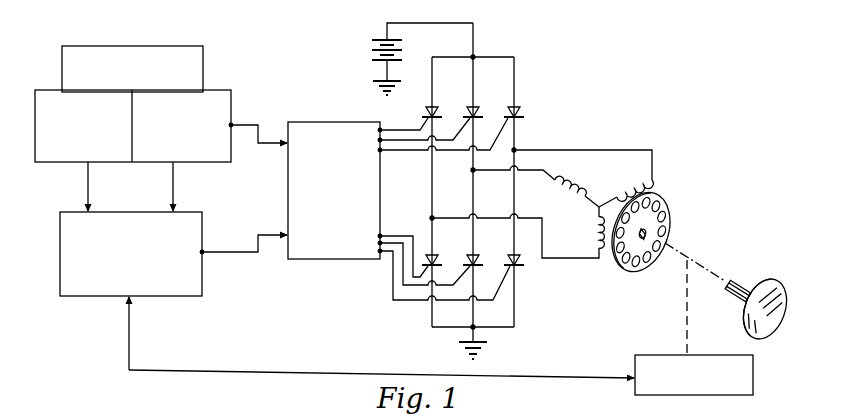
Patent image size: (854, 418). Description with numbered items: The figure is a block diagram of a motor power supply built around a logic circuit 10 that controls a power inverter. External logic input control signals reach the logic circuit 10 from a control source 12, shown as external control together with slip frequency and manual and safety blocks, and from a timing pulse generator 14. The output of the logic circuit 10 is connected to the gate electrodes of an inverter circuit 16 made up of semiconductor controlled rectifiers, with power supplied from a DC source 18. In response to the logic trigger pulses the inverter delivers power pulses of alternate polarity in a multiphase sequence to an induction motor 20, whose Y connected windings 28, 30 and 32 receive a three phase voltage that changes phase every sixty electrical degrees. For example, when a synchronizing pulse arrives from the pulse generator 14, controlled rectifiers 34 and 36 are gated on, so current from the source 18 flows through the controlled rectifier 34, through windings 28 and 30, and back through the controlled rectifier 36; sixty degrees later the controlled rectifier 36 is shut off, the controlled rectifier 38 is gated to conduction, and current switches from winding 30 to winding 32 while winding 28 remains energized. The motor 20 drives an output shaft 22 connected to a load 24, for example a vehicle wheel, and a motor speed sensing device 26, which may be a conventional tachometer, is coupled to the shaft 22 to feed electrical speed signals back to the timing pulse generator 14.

The logic circuit 10 is at (317, 119).
The control source 12 is at (87, 41).
The timing pulse generator 14 is at (198, 211).
The inverter circuit 16 is at (472, 187).
The DC source 18 is at (372, 52).
The induction motor 20 is at (565, 192).
The output shaft 22 is at (652, 233).
The load 24 is at (769, 278).
The motor speed sensing device 26 is at (655, 362).
The motor winding 28 is at (625, 183).
The motor winding 30 is at (568, 190).
The motor winding 32 is at (594, 238).
The controlled rectifier 34 is at (518, 117).
The controlled rectifier 36 is at (478, 262).
The controlled rectifier 38 is at (436, 262).